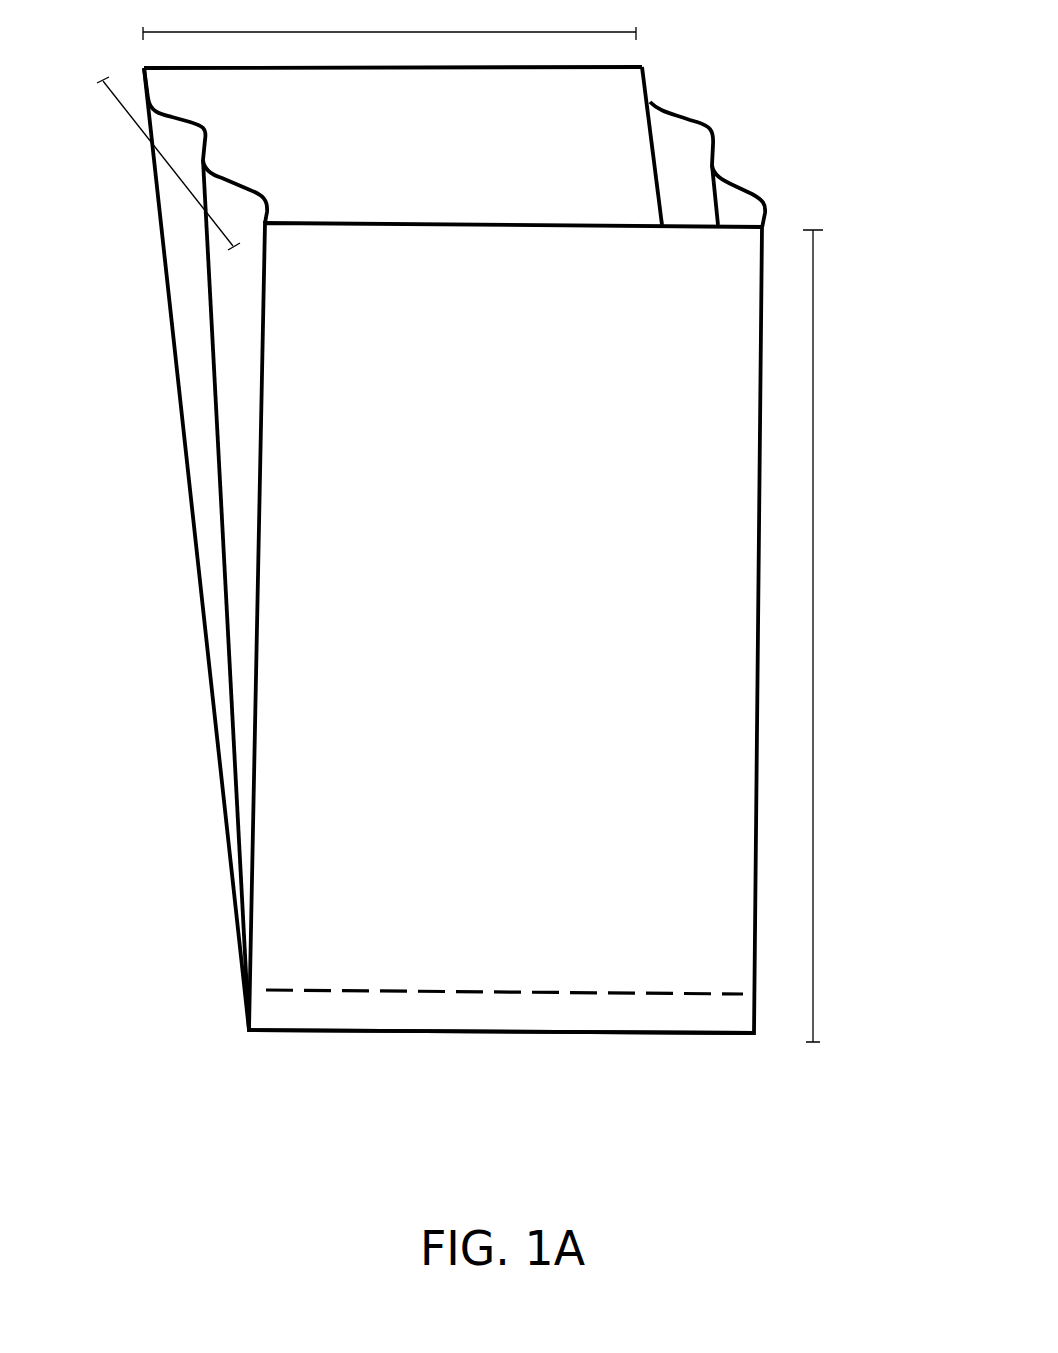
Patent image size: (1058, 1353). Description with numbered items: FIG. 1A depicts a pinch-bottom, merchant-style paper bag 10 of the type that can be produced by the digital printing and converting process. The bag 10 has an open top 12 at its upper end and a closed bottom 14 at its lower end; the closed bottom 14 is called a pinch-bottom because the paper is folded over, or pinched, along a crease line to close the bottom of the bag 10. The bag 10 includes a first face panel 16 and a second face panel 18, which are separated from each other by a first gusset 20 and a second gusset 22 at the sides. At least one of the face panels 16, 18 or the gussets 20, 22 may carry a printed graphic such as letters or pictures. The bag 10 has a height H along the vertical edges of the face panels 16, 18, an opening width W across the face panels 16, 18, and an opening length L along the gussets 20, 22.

The bag 10 is at (448, 608).
The open top 12 is at (662, 139).
The closed bottom 14 is at (417, 1033).
The first face panel 16 is at (337, 773).
The second face panel 18 is at (498, 125).
The first gusset 20 is at (222, 172).
The second gusset 22 is at (712, 158).